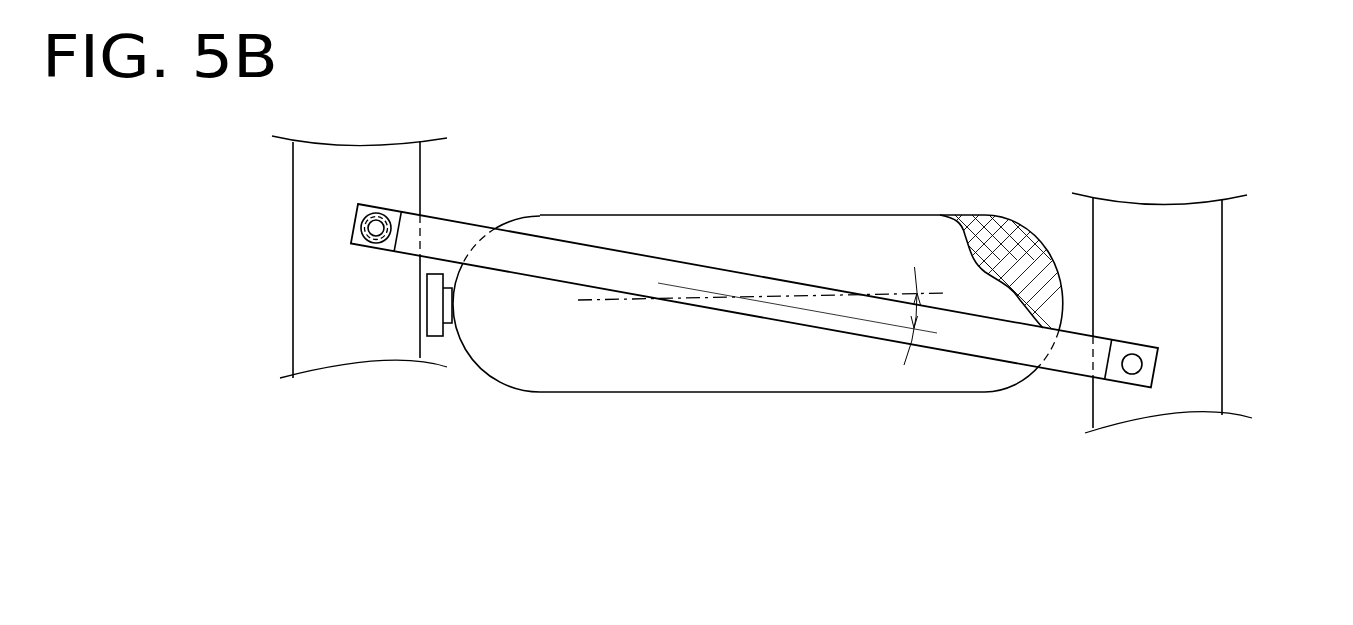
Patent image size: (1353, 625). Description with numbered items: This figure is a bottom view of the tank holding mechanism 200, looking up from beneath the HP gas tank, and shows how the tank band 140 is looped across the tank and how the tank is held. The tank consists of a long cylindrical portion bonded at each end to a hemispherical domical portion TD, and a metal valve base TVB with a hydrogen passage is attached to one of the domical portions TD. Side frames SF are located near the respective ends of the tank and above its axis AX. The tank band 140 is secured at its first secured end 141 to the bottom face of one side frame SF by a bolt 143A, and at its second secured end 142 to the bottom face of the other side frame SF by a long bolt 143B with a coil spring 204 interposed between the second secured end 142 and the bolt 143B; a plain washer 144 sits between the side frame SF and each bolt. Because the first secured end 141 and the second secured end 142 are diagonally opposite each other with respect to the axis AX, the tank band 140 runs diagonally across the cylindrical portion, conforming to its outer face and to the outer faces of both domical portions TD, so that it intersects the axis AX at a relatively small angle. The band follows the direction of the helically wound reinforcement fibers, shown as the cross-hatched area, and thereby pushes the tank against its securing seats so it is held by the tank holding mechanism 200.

The tank holding mechanism 200 is at (587, 83).
The tank band 140 is at (573, 262).
The first secured end 141 is at (1140, 348).
The second secured end 142 is at (392, 252).
The bolt 143A is at (1134, 372).
The long bolt 143B is at (375, 230).
The plain washer 144 is at (378, 213).
The coil spring 204 is at (390, 212).
The side frame SF is at (308, 192).
The domical portion TD is at (1033, 237).
The valve base TVB is at (435, 333).
The axis AX is at (778, 297).